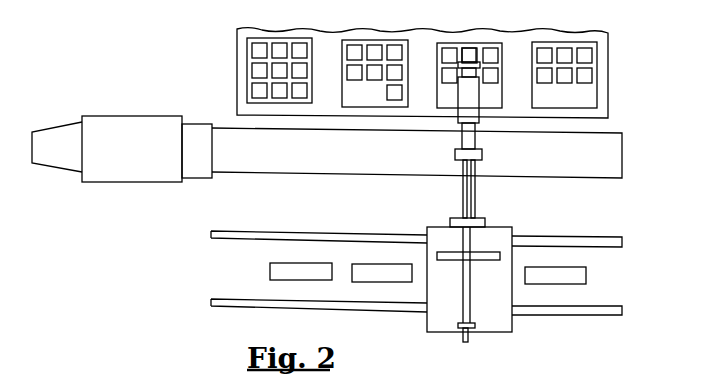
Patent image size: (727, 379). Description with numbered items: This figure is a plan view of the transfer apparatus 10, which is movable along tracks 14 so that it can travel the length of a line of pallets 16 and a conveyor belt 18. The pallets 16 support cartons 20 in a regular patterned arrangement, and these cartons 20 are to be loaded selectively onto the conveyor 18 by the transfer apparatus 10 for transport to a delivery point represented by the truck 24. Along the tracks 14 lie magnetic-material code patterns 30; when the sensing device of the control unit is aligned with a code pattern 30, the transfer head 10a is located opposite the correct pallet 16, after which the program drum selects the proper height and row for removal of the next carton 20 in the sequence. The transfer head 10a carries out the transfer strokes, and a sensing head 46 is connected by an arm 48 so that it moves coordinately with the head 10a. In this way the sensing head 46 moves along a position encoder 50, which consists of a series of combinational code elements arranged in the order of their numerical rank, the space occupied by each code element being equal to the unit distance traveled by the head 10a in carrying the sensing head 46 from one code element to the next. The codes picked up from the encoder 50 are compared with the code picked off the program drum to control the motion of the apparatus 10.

The pallets 16 is at (437, 46).
The cartons 20 is at (470, 52).
The transfer head 10a is at (482, 97).
The truck 24 is at (142, 156).
The conveyor belt 18 is at (349, 160).
The transfer apparatus 10 is at (453, 216).
The position encoder 50 is at (505, 329).
The arm 48 is at (471, 243).
The sensing head 46 is at (485, 260).
The tracks 14 is at (268, 238).
The magnetic-material code pattern 30 is at (362, 262).